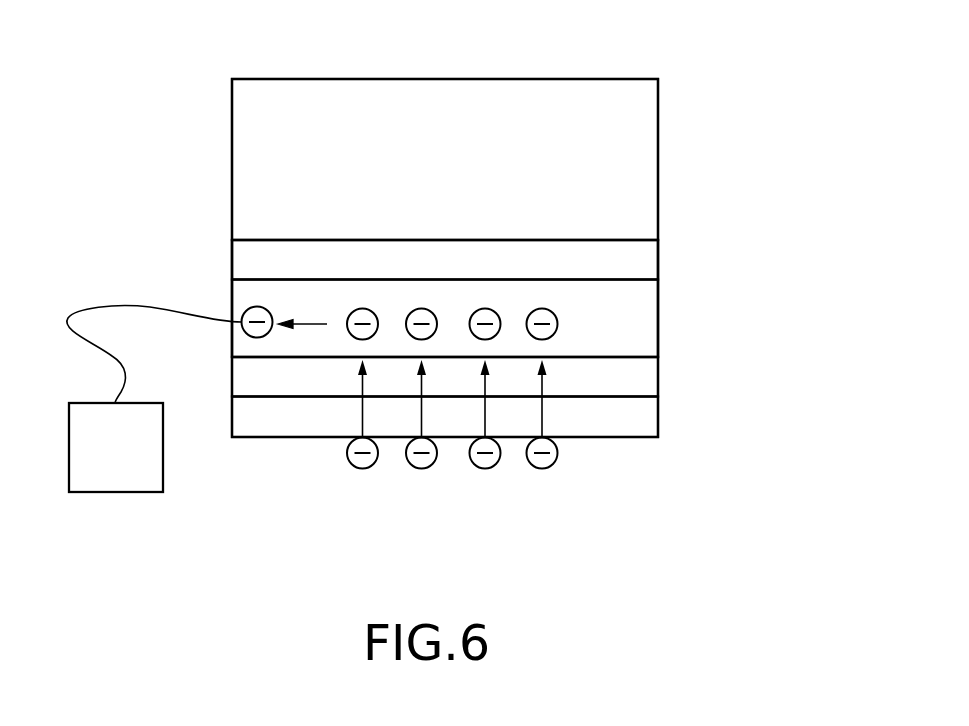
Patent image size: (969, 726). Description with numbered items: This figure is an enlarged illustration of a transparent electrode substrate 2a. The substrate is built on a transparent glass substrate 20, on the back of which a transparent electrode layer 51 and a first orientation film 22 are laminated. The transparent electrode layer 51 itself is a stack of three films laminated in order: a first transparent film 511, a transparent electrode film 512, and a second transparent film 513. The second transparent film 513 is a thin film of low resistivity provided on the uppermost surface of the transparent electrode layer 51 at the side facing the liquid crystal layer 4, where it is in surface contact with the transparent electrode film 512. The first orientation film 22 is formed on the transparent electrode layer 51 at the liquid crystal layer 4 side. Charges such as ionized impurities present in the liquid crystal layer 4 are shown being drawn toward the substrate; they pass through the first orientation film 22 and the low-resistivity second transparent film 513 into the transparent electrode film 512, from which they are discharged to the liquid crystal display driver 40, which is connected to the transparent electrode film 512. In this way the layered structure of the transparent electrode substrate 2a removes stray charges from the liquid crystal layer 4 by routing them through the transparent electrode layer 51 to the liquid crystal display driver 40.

The transparent electrode substrate 2a is at (156, 98).
The transparent glass substrate 20 is at (643, 151).
The transparent electrode layer 51 is at (822, 218).
The first transparent film 511 is at (642, 263).
The transparent electrode film 512 is at (638, 325).
The second transparent film 513 is at (648, 385).
The first orientation film 22 is at (638, 422).
The liquid crystal layer 4 is at (588, 457).
The liquid crystal display driver 40 is at (122, 481).